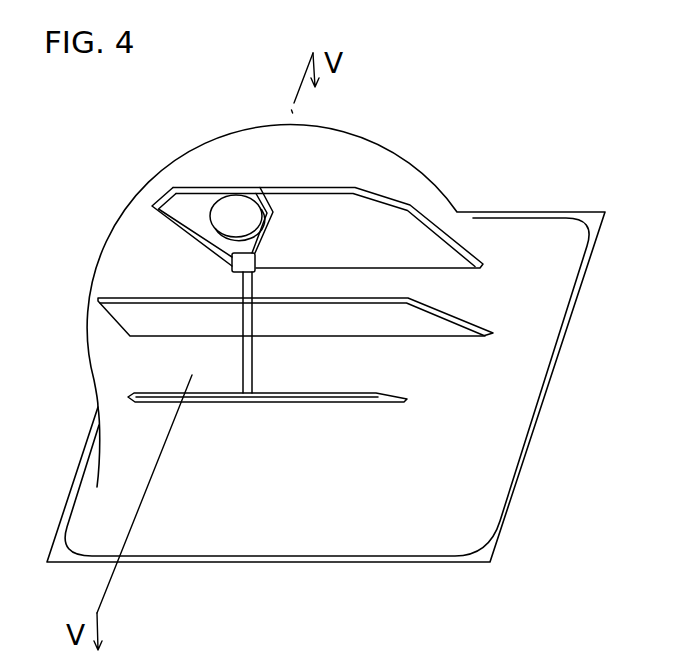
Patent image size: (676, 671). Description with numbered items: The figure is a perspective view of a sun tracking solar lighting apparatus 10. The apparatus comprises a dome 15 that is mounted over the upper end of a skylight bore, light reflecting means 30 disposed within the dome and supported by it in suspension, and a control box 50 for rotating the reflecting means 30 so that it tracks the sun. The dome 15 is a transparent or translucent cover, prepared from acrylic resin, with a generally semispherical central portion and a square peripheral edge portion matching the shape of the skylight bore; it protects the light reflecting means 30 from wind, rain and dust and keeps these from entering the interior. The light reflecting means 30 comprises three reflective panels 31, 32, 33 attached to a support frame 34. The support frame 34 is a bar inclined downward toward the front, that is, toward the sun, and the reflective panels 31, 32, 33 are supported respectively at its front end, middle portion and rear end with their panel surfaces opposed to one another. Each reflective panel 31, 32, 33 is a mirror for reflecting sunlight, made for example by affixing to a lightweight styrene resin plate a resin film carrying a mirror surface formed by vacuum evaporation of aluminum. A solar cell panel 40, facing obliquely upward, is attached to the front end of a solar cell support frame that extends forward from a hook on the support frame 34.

The sun tracking solar lighting apparatus 10 is at (573, 112).
The dome 15 is at (533, 283).
The light reflecting means 30 is at (321, 330).
The reflective panel 31 is at (308, 407).
The reflective panel 32 is at (452, 322).
The reflective panel 33 is at (420, 230).
The support frame 34 is at (248, 357).
The solar cell panel 40 is at (232, 264).
The control box 50 is at (227, 208).